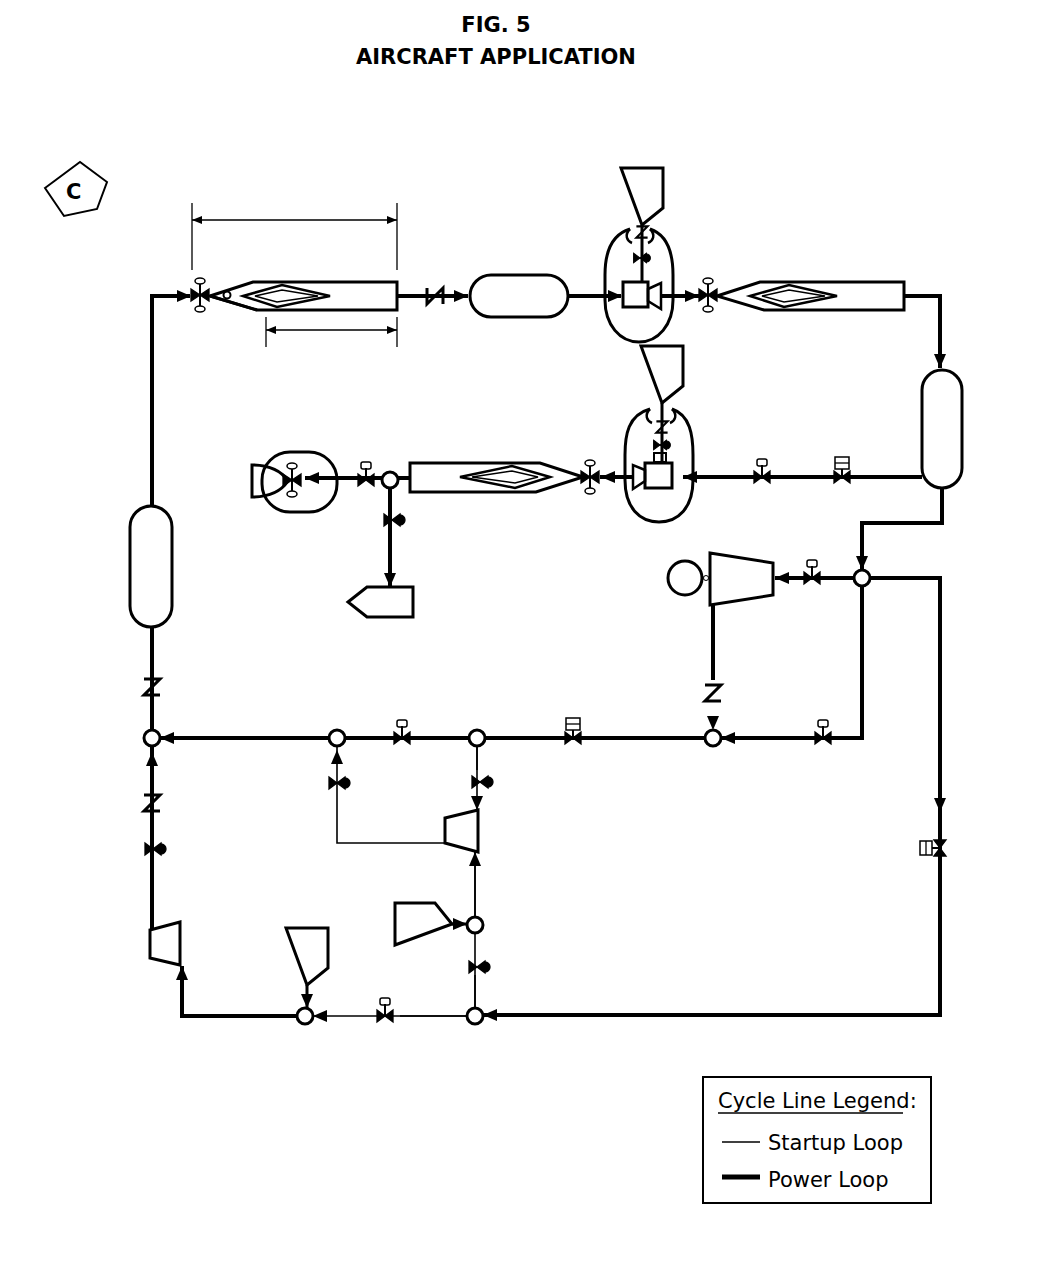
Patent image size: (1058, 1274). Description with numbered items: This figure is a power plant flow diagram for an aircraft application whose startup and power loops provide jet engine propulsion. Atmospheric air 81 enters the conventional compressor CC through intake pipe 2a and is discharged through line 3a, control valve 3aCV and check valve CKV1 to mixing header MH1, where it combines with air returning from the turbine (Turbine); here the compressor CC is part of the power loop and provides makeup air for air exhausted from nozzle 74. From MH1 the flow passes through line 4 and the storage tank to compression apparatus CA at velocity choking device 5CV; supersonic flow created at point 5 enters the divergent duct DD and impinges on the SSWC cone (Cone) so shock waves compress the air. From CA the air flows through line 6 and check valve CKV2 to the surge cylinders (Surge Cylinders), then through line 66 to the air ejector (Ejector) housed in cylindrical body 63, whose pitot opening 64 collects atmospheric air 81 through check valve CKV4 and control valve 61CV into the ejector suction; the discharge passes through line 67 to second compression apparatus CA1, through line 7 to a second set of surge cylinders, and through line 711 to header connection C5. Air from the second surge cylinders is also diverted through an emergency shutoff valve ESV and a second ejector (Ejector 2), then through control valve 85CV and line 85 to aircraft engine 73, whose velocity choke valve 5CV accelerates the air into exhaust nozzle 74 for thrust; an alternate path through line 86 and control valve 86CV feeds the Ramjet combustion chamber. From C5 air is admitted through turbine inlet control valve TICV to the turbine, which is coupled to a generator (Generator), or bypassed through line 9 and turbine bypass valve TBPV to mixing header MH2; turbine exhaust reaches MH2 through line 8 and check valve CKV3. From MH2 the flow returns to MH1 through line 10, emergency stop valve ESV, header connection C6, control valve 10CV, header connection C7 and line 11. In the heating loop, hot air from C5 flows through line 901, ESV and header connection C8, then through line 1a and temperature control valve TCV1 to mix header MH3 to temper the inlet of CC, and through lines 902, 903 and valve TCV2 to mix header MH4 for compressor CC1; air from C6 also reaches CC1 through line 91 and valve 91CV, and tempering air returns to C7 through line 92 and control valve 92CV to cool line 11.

The point 5 is at (225, 285).
The line 6 is at (415, 302).
The line 7 is at (933, 320).
The turbine exhaust line 8 is at (717, 658).
The line 9 is at (867, 660).
The line 10 is at (685, 735).
The line 11 is at (267, 735).
The line 4 is at (145, 713).
The line 3a is at (147, 902).
The intake pipe 2a is at (215, 1015).
The line 1a is at (443, 1008).
The cylindrical body 63 is at (608, 243).
The pitot opening 64 is at (623, 224).
The line 66 is at (588, 290).
The line 67 is at (677, 288).
The aircraft engine 73 is at (297, 452).
The engine exhaust nozzle 74 is at (250, 483).
The atmospheric air 81 is at (663, 190).
The line 85 is at (338, 474).
The line 86 is at (397, 545).
The startup line from C6 91 is at (480, 758).
The line 92 is at (385, 840).
The line 901 is at (692, 1012).
The line 902 is at (480, 997).
The line 903 is at (472, 875).
The line 711 is at (903, 527).
The velocity choking device 5CV is at (198, 308).
The check valve CKV1 is at (157, 678).
The check valve CKV2 is at (438, 274).
The check valve 3 CKV3 is at (718, 687).
The check valve CKV4 is at (647, 228).
The control valve 61CV is at (647, 263).
The control valve 85CV is at (373, 470).
The control valve 86CV is at (407, 522).
The control valve 91 91CV is at (493, 785).
The control valve 92CV is at (332, 788).
The control valve 10CV is at (407, 720).
The control valve 3aCV is at (145, 855).
The inlet air temperature control valve TCV1 is at (383, 1000).
The air temperature control valve TCV2 is at (487, 962).
The turbine inlet control valve TICV is at (808, 565).
The turbine bypass valve TBPV is at (832, 750).
The emergency stop valve ESV is at (838, 462).
The mixing header MH1 is at (157, 730).
The mixing header MH2 is at (717, 747).
The mix header MH3 is at (300, 1023).
The mix header MH4 is at (480, 920).
The header connection C5 is at (868, 585).
The header connection C6 is at (480, 728).
The header connection C7 is at (338, 730).
The connecting header C8 is at (483, 1023).
The compression apparatus CA is at (294, 231).
The second compression apparatus CA1 is at (835, 281).
The divergent duct DD is at (240, 311).
The supersonic shock wave compressor SSWC is at (331, 338).
The conventional compressor CC is at (158, 960).
The oil-free centrifugal compressor CC1 is at (480, 838).
The SSWC cone Cone is at (273, 285).
The conventional air ejector Ejector is at (623, 307).
The conventional ejector Ejector 2 is at (672, 487).
The Ramjet aircraft engine Ramjet is at (413, 600).
The turbine Turbine is at (745, 605).
The generator Generator is at (670, 590).
The surge cylinders Surge Cylinders is at (488, 273).